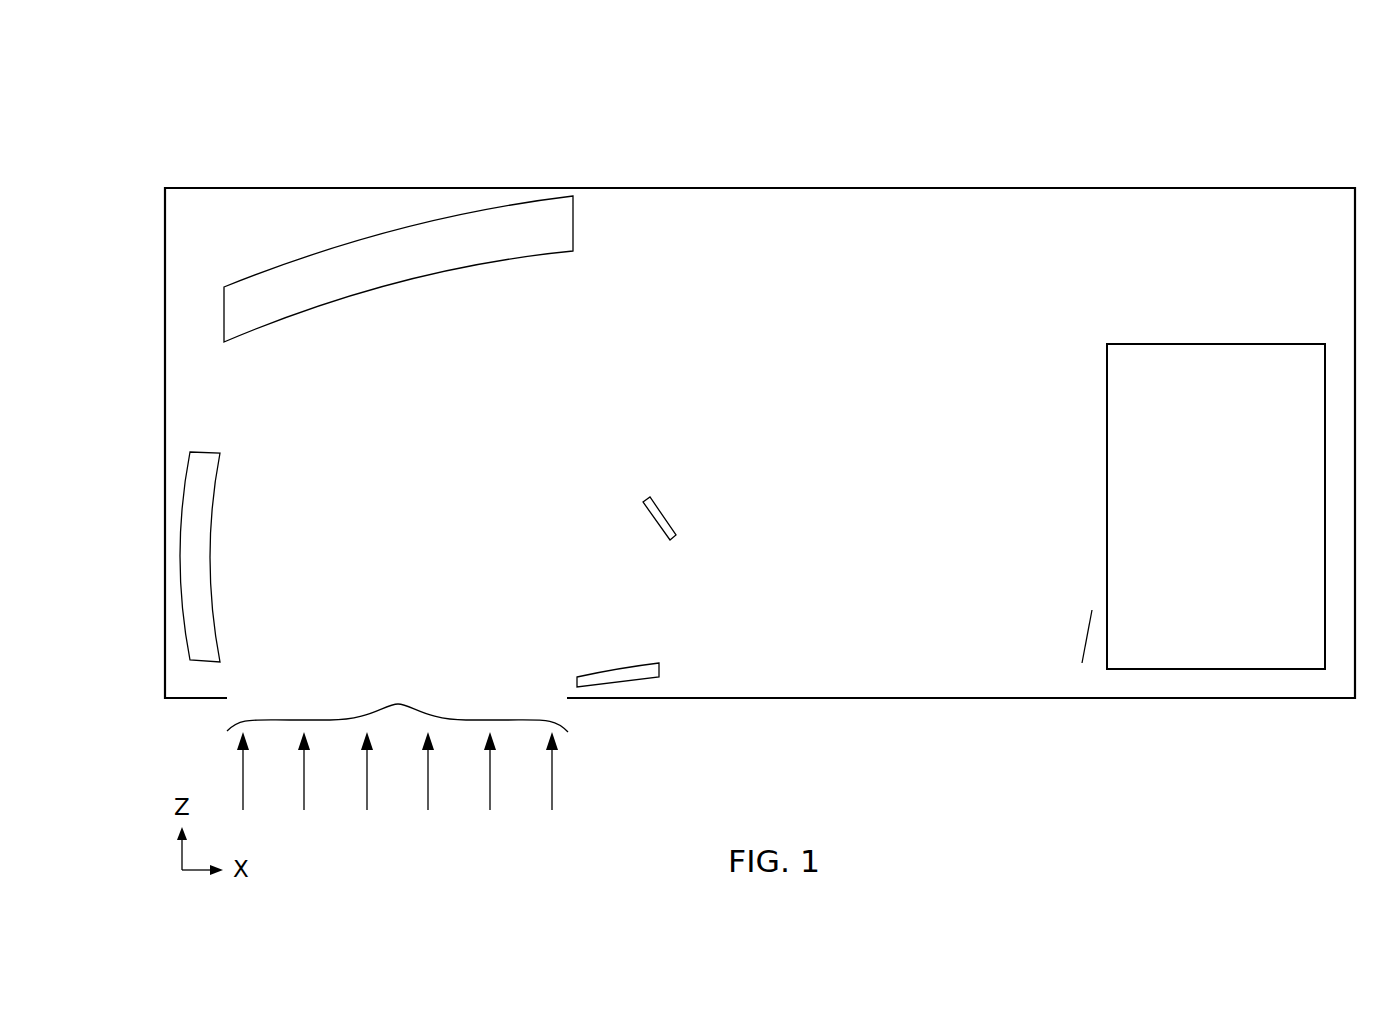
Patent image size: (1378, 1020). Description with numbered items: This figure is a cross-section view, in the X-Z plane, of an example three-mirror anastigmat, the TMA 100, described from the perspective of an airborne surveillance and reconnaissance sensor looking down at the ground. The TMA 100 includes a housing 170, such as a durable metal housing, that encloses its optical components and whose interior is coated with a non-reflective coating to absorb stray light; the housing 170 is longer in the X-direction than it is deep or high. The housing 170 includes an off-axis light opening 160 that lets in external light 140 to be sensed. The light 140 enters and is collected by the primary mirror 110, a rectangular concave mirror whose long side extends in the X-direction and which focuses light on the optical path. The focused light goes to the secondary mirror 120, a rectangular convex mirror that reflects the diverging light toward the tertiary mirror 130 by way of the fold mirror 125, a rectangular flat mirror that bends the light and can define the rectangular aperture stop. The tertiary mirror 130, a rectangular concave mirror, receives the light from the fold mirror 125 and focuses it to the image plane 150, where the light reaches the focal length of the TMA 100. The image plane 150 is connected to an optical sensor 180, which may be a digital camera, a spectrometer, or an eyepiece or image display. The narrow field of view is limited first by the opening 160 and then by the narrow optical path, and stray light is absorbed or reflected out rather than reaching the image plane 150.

The TMA 100 is at (1209, 134).
The primary mirror 110 is at (458, 267).
The secondary mirror 120 is at (630, 663).
The fold mirror 125 is at (663, 522).
The tertiary mirror 130 is at (212, 592).
The external light 140 is at (375, 874).
The image plane 150 is at (1074, 610).
The light opening 160 is at (375, 696).
The housing 170 is at (925, 699).
The optical sensor 180 is at (1216, 506).